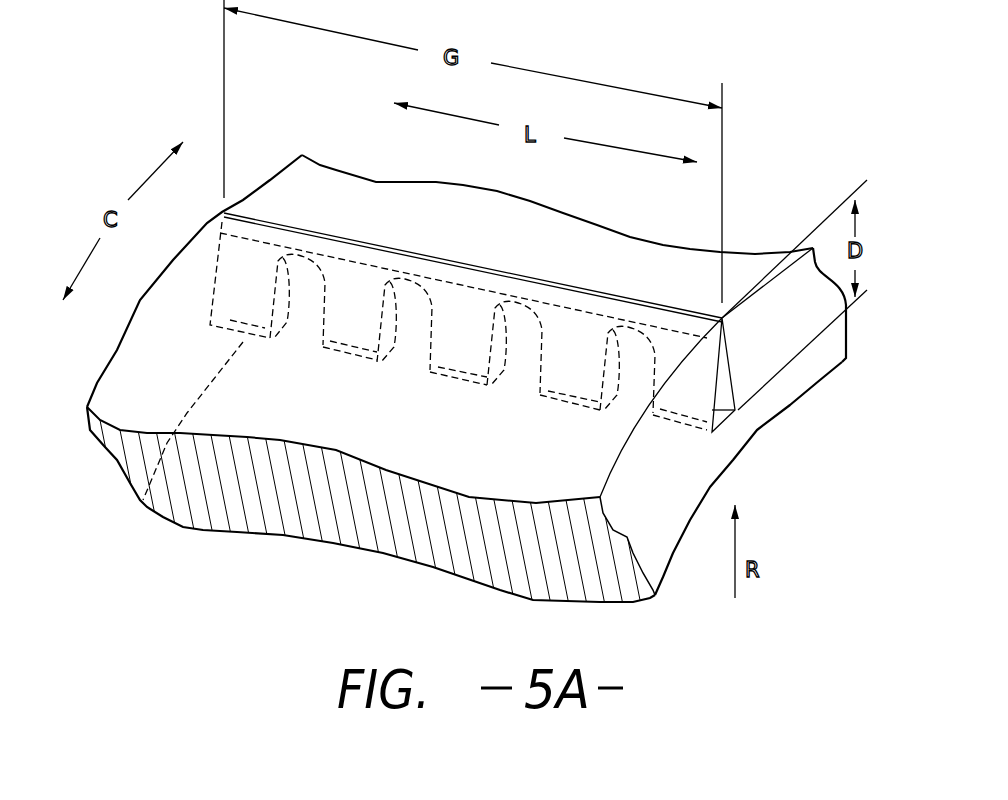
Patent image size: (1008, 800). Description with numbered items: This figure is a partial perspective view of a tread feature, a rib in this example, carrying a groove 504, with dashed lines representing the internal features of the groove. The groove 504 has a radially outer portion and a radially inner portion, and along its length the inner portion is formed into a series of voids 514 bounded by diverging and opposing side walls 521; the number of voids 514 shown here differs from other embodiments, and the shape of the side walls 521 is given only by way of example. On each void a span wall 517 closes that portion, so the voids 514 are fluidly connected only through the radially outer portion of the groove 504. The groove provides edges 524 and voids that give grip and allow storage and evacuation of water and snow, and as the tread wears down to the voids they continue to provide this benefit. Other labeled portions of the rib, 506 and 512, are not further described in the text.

The groove 504 is at (665, 290).
The ring body 506 is at (122, 332).
The edge 512 is at (542, 289).
The voids 514 is at (356, 296).
The slot 517 is at (502, 367).
The opposing side walls 521 is at (240, 295).
The seam 524 is at (277, 222).